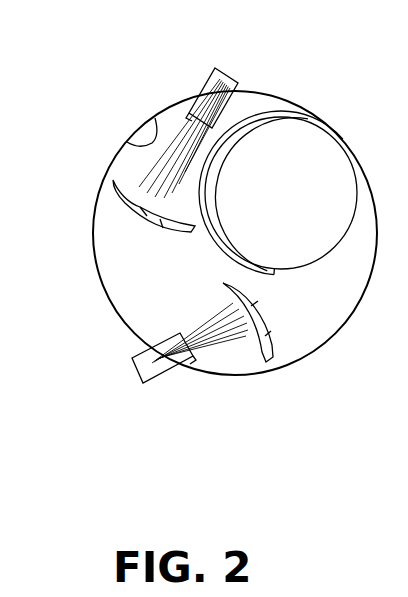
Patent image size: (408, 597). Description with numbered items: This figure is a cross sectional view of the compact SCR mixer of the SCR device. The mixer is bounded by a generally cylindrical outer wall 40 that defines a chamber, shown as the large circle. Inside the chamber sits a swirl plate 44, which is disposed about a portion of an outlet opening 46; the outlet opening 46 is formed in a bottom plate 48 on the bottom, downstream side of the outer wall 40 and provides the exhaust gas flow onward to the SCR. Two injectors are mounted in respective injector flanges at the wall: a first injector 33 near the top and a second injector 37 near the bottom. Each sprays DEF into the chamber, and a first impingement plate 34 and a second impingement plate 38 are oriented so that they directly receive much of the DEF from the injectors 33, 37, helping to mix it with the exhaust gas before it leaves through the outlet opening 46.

The first injector 33 is at (208, 82).
The first impingement plate 34 is at (140, 212).
The second injector 37 is at (153, 382).
The second impingement plate 38 is at (273, 335).
The outer wall 40 is at (127, 141).
The swirl plate 44 is at (248, 117).
The outlet opening 46 is at (279, 198).
The bottom plate 48 is at (173, 299).